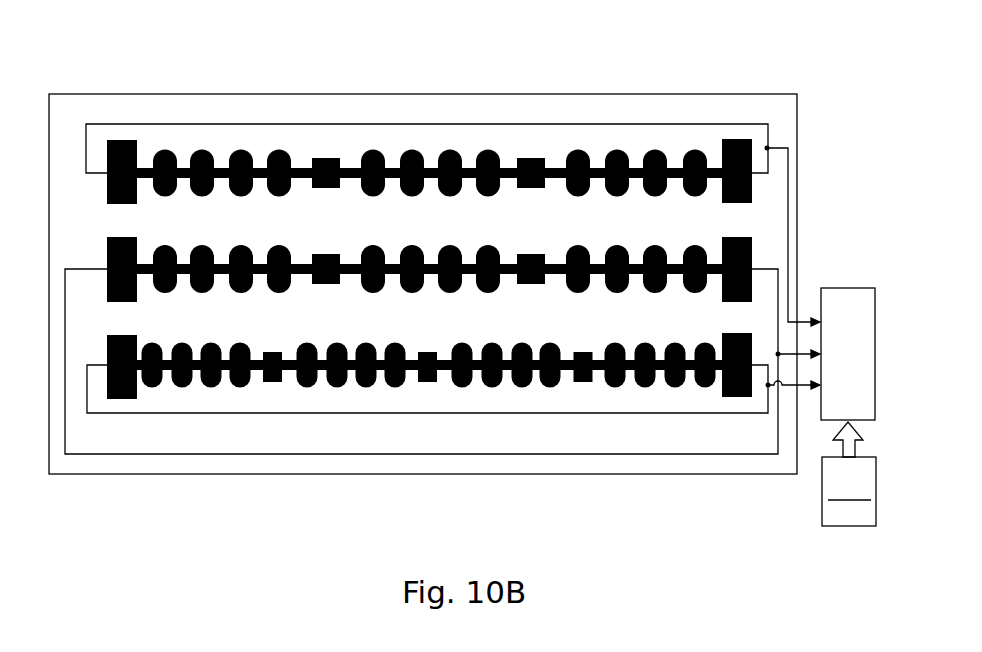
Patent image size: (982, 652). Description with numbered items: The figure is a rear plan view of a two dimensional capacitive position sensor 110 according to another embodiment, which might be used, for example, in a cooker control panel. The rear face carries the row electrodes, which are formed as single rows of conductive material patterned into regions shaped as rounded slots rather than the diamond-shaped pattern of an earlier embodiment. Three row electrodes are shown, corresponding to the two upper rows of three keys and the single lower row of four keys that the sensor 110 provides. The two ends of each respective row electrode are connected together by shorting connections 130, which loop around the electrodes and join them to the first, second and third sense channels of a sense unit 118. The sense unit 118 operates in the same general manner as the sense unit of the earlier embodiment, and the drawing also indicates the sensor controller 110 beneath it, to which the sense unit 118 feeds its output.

The two dimensional capacitive position sensor 110 is at (609, 499).
The sense unit 118 is at (851, 288).
The shorting connections 130 is at (258, 124).